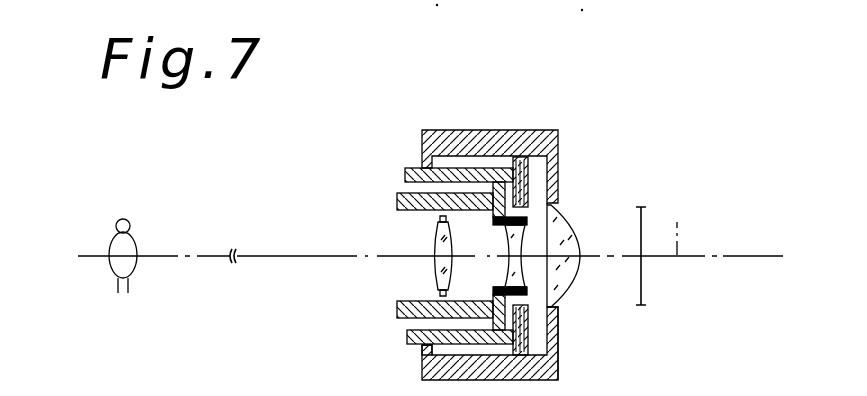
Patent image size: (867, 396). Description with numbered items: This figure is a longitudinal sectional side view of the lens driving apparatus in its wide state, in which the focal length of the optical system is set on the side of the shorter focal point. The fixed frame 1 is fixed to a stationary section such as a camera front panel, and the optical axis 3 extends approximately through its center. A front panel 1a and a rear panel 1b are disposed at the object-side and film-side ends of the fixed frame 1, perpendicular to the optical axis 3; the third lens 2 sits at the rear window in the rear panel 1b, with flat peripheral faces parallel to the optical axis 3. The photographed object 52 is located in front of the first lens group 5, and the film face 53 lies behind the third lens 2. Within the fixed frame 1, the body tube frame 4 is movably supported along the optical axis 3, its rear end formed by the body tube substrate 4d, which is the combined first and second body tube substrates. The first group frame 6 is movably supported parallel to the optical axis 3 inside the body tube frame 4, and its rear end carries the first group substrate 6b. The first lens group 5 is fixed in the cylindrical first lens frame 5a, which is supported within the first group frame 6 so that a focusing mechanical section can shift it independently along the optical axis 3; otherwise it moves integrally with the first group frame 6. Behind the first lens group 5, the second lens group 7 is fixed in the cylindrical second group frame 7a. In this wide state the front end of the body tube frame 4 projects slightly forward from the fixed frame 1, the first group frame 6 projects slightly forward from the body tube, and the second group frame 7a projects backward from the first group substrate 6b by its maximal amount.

The fixed frame 1 is at (522, 130).
The front panel 1a is at (425, 353).
The rear panel 1b is at (559, 312).
The third lens 2 is at (572, 220).
The optical axis 3 is at (678, 227).
The body tube frame 4 is at (395, 172).
The body tube substrate 4d is at (529, 163).
The first lens group 5 is at (430, 241).
The first lens frame 5a is at (440, 291).
The first group frame 6 is at (392, 200).
The first group substrate 6b is at (535, 213).
The second lens group 7 is at (525, 263).
The second group frame 7a is at (548, 301).
The photographed object 52 is at (129, 223).
The film face 53 is at (643, 283).